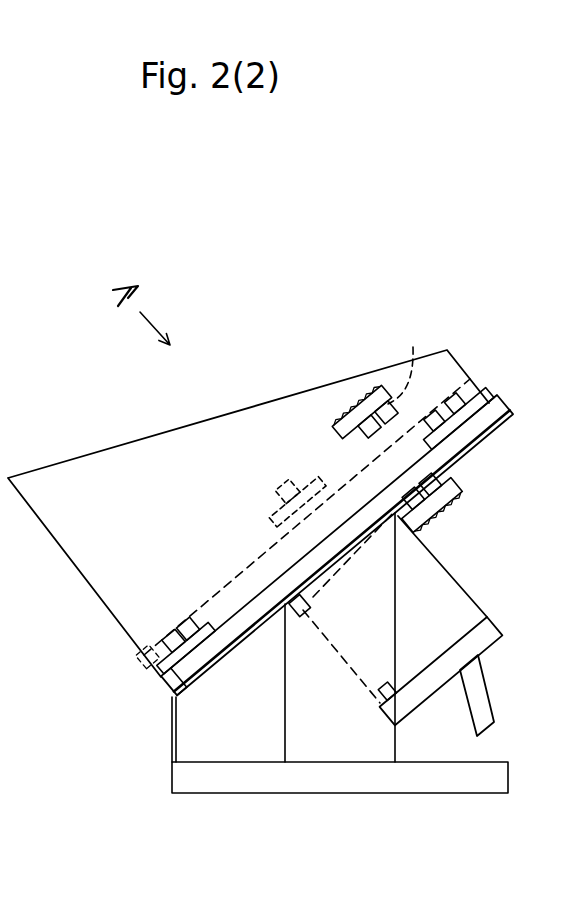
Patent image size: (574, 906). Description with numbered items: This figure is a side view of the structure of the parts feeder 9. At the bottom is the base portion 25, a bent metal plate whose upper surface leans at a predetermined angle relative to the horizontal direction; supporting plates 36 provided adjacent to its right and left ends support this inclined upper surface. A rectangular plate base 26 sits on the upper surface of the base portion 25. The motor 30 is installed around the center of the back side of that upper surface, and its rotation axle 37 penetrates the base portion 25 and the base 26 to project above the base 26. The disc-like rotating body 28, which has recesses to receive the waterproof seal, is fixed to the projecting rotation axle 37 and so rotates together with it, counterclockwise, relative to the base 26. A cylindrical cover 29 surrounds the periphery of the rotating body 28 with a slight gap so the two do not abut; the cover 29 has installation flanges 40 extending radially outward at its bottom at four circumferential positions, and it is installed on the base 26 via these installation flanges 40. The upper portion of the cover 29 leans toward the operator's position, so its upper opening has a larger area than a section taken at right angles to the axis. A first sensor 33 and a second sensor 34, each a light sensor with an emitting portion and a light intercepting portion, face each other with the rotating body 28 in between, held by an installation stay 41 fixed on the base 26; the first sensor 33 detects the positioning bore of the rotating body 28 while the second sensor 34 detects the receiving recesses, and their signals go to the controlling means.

The parts feeder 9 is at (70, 240).
The base portion 25 is at (185, 776).
The base 26 is at (160, 686).
The rotating body 28 is at (237, 580).
The cover 29 is at (125, 458).
The motor 30 is at (430, 598).
The first sensor 33 is at (345, 440).
The second sensor 34 is at (409, 356).
The supporting plate 36 is at (323, 705).
The rotation axle 37 is at (283, 492).
The installation flange 40 is at (458, 412).
The installation stay 41 is at (352, 400).